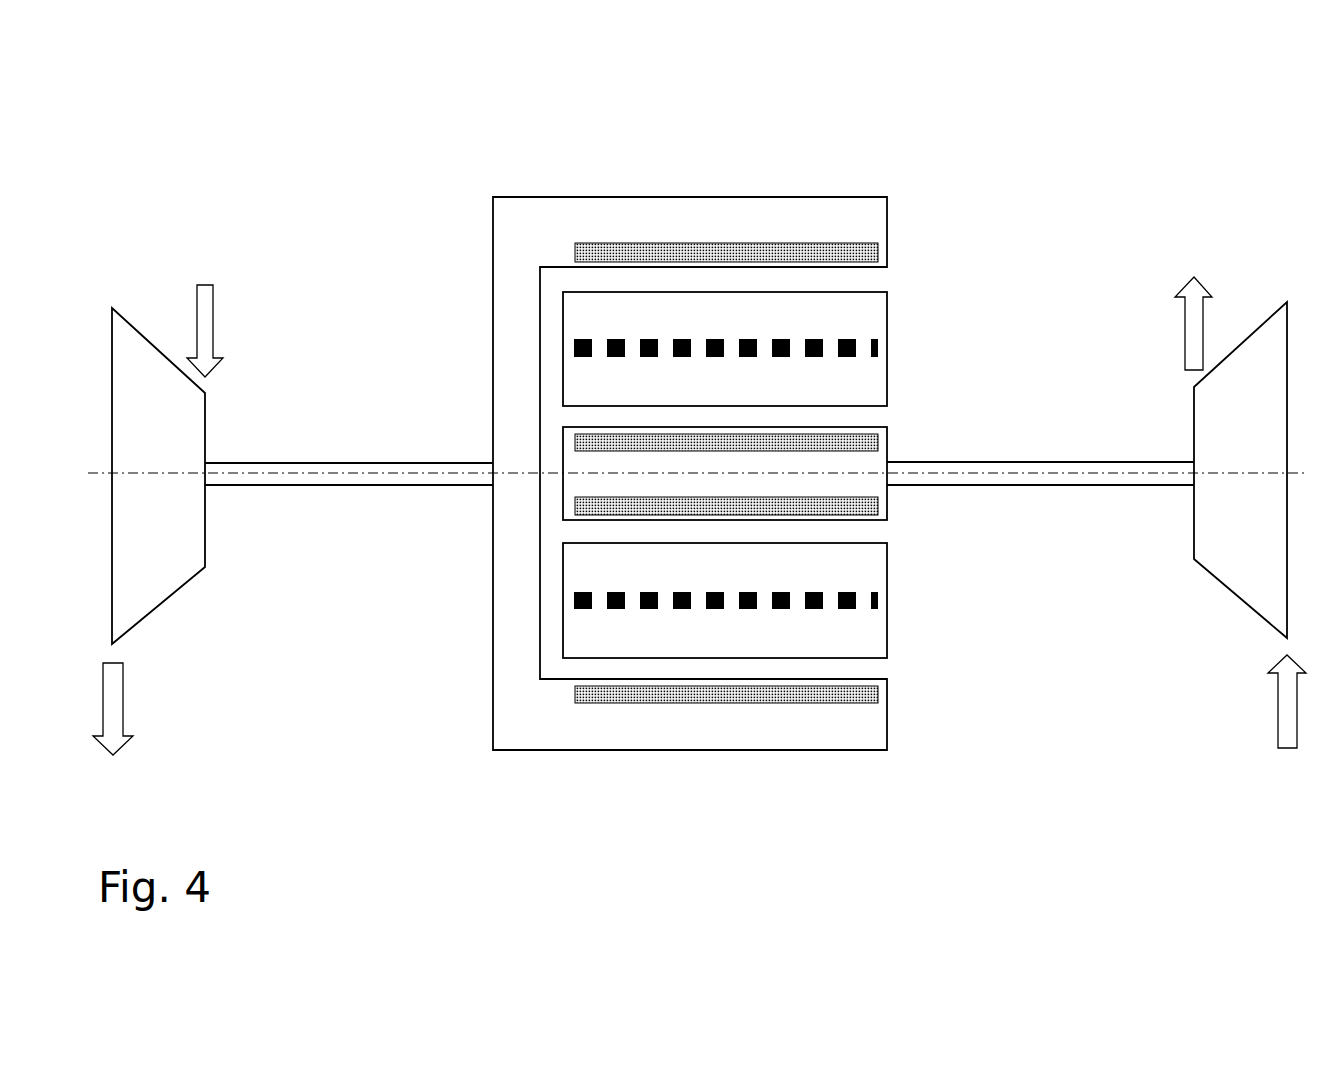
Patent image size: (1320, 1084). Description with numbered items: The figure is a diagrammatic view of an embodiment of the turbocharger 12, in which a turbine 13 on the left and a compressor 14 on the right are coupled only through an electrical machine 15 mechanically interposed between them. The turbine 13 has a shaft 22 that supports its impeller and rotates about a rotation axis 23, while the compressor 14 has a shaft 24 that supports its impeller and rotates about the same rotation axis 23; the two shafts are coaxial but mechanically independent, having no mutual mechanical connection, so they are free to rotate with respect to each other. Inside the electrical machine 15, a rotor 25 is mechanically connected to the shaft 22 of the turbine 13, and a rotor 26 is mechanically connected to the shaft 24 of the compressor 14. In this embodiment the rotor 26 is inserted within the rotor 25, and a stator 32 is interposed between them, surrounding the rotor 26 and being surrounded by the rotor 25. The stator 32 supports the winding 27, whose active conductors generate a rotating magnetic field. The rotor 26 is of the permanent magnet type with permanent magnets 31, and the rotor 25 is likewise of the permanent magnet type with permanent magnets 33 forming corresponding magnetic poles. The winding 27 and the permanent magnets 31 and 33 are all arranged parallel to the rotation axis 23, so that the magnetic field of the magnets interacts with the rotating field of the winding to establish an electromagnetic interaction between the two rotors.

The turbocharger 12 is at (1203, 881).
The turbine 13 is at (170, 573).
The compressor 14 is at (1236, 568).
The electrical machine 15 is at (535, 150).
The shaft 22 is at (373, 465).
The rotation axis 23 is at (1130, 473).
The shaft 24 is at (1083, 462).
The rotor 25 is at (878, 227).
The rotor 26 is at (885, 483).
The winding 27 is at (877, 348).
The permanent magnets 31 is at (877, 438).
The stator 32 is at (880, 388).
The permanent magnets 33 is at (708, 257).